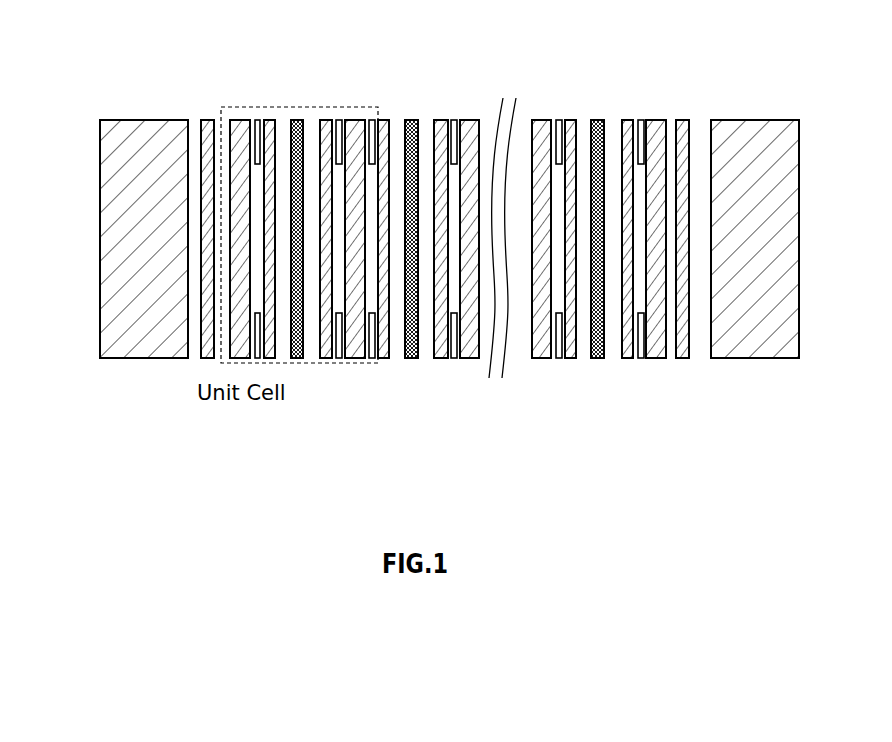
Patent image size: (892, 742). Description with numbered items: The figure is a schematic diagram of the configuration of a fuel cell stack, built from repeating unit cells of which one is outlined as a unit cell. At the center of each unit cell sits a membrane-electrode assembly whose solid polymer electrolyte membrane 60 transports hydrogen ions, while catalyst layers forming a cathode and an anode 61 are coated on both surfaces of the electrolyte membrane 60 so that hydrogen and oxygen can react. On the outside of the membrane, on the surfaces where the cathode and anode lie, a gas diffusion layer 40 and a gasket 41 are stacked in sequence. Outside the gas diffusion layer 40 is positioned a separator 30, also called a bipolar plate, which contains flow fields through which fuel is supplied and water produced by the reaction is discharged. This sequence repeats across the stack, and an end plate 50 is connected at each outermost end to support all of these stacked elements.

The end plate 50 is at (122, 225).
The separator 30 is at (248, 120).
The gas diffusion layer 40 is at (272, 120).
The gasket 41 is at (340, 120).
The electrolyte membrane 60 is at (294, 120).
The cathode and anode 61 is at (304, 340).